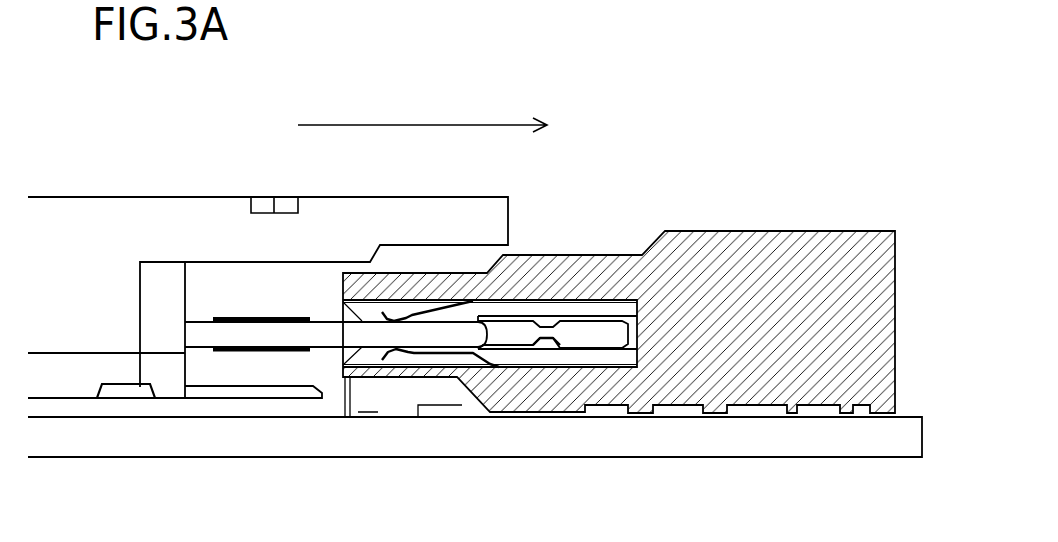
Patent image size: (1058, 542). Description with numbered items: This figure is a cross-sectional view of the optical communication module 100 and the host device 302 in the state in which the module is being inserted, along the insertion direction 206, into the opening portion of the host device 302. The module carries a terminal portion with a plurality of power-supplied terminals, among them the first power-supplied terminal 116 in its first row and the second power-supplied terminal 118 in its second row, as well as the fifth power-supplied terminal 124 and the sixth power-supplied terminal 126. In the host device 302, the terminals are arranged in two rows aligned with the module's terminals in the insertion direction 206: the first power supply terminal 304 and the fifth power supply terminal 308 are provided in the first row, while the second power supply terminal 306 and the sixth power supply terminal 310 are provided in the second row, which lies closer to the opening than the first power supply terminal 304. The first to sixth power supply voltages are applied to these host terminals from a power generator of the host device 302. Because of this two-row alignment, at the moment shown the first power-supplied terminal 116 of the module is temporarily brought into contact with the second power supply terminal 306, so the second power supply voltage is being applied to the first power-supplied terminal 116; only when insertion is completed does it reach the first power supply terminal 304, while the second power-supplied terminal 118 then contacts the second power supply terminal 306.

The optical communication module 100 is at (128, 195).
The first power-supplied terminal 116 is at (366, 322).
The second power-supplied terminal 118 is at (247, 317).
The fifth power-supplied terminal 124 is at (367, 348).
The sixth power-supplied terminal 126 is at (247, 350).
The insertion direction 206 is at (418, 123).
The host device 302 is at (823, 230).
The first power supply terminal 304 is at (588, 316).
The second power supply terminal 306 is at (427, 300).
The fifth power supply terminal 308 is at (603, 353).
The sixth power supply terminal 310 is at (448, 353).